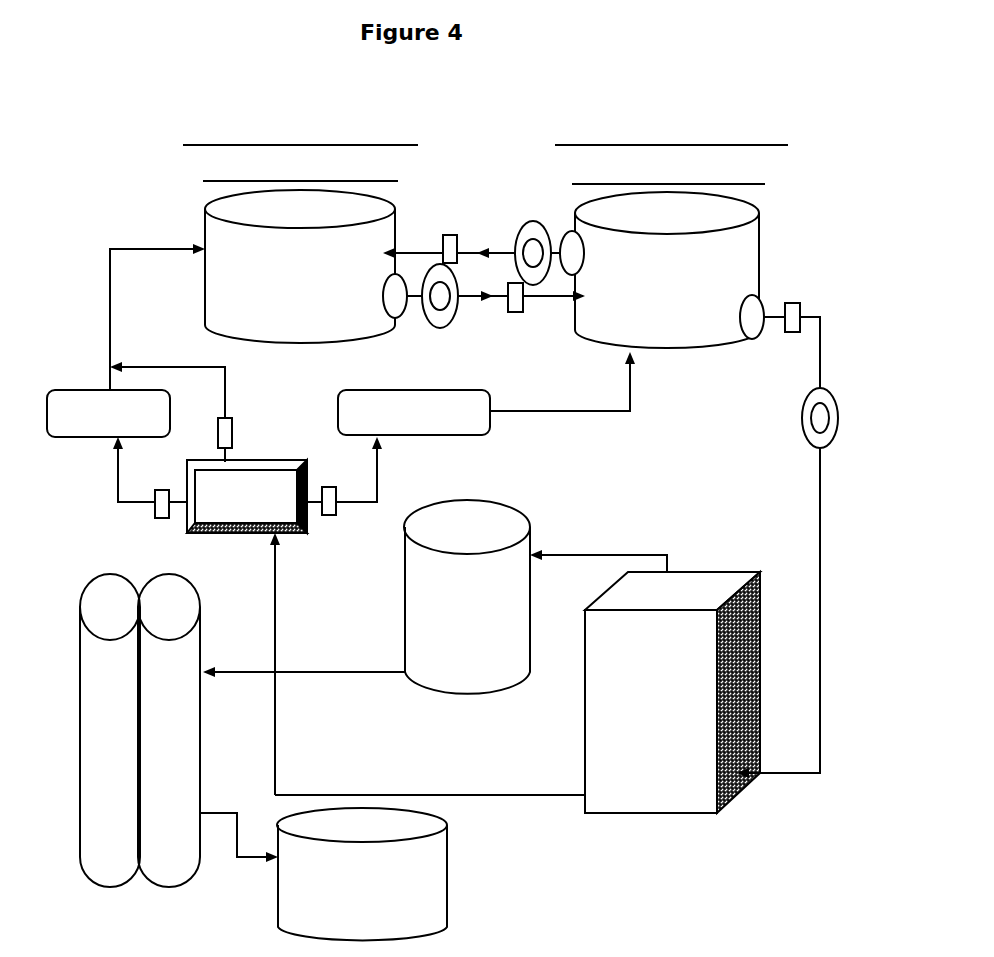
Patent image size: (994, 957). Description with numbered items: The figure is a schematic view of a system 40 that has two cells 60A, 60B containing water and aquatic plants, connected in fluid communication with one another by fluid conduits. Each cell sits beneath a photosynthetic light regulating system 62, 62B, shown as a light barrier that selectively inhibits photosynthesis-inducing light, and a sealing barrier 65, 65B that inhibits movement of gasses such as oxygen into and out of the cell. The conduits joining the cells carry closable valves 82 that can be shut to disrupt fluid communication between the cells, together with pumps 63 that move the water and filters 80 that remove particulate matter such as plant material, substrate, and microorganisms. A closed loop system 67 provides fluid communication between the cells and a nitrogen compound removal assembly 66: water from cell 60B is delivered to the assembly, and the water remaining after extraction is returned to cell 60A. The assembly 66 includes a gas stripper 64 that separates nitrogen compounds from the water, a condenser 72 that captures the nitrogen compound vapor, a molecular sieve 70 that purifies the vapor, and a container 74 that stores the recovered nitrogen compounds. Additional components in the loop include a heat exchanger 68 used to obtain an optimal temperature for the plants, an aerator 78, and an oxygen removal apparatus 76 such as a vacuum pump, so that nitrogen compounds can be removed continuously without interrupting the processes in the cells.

The system 40 is at (424, 84).
The photosynthetic light regulating system 62 is at (218, 143).
The sealing barrier 65 is at (205, 178).
The photosynthetic light regulating system 62B is at (608, 143).
The sealing barrier 65B is at (752, 183).
The cell 60A is at (218, 237).
The cell 60B is at (745, 233).
The closed loop system 67 is at (85, 294).
The aerator 78 is at (60, 390).
The heat exchanger 68 is at (187, 520).
The oxygen removal apparatus 76 is at (490, 430).
The condenser 72 is at (410, 595).
The gas stripper 64 is at (705, 570).
The molecular sieve 70 is at (197, 593).
The container 74 is at (448, 872).
The nitrogen compound removal assembly 66 is at (563, 904).
The filter 80 is at (573, 230).
The pump 63 is at (520, 225).
The closable valve 82 is at (448, 235).